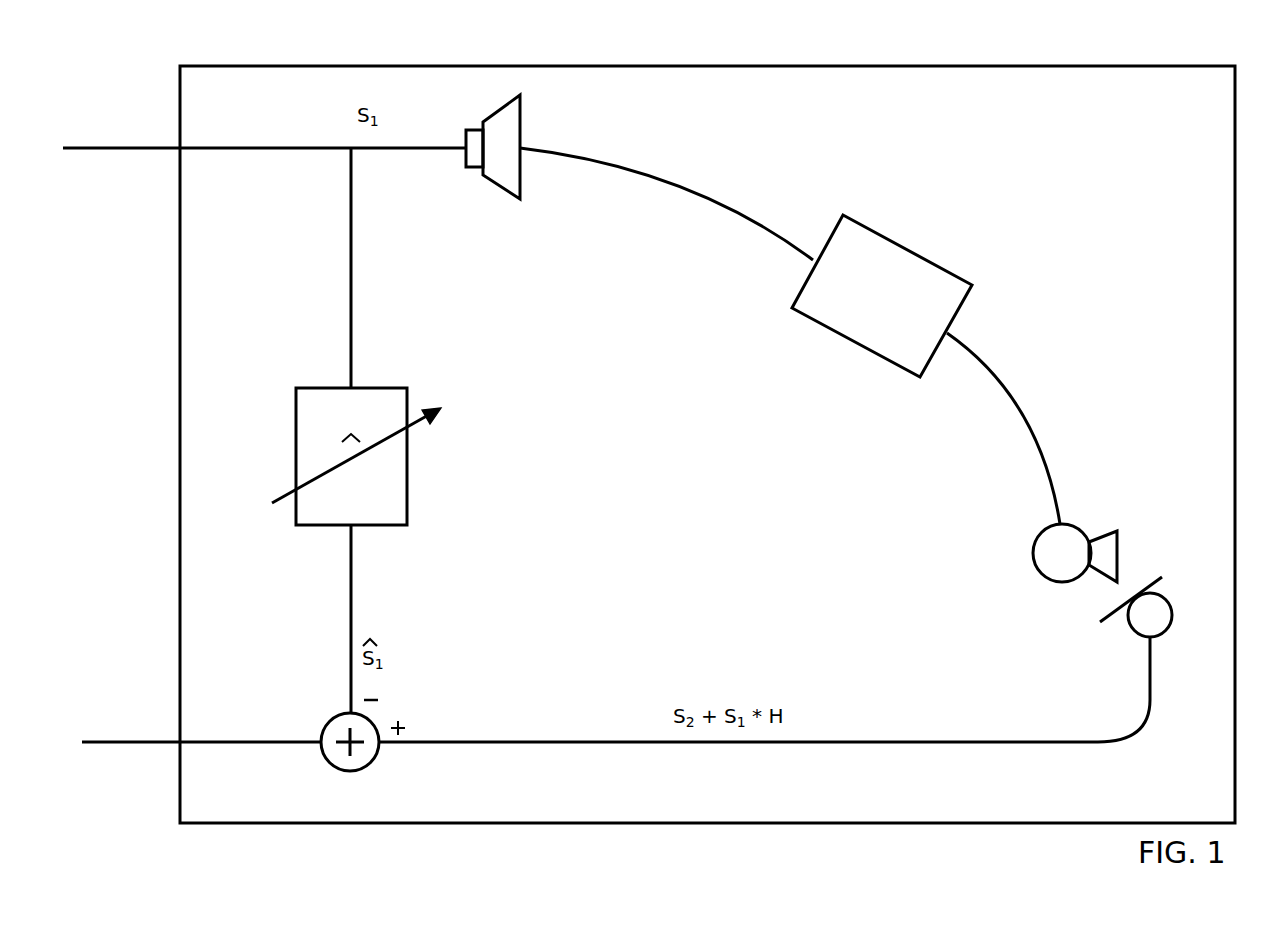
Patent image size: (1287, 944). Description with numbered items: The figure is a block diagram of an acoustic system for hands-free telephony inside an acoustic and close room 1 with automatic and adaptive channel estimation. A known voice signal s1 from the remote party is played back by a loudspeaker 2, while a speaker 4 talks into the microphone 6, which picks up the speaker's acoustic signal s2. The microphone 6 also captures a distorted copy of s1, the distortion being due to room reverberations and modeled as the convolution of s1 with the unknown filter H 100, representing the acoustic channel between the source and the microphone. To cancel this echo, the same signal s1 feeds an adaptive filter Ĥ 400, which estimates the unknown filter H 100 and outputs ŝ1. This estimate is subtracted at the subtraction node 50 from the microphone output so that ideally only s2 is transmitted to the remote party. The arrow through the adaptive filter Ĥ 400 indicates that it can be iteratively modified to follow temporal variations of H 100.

The acoustic and close room 1 is at (1236, 92).
The loudspeaker 2 is at (521, 120).
The speaker 4 is at (1034, 560).
The microphone 6 is at (1170, 626).
The subtraction 50 is at (352, 771).
The unknown filter H 100 is at (912, 250).
The adaptive filter Ĥ 400 is at (378, 386).